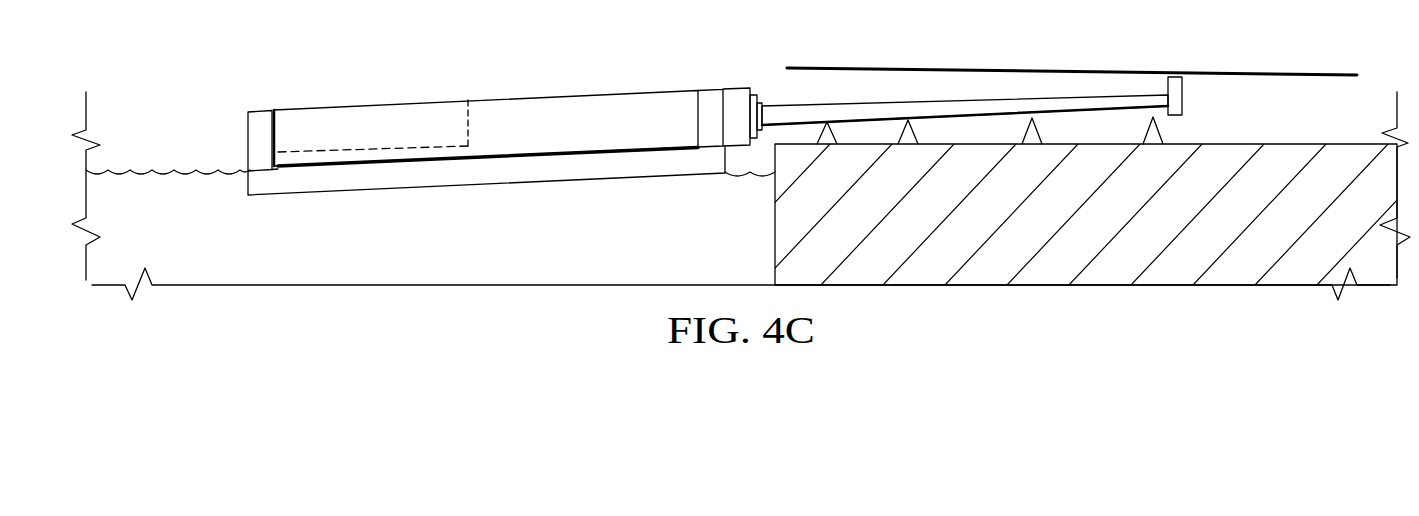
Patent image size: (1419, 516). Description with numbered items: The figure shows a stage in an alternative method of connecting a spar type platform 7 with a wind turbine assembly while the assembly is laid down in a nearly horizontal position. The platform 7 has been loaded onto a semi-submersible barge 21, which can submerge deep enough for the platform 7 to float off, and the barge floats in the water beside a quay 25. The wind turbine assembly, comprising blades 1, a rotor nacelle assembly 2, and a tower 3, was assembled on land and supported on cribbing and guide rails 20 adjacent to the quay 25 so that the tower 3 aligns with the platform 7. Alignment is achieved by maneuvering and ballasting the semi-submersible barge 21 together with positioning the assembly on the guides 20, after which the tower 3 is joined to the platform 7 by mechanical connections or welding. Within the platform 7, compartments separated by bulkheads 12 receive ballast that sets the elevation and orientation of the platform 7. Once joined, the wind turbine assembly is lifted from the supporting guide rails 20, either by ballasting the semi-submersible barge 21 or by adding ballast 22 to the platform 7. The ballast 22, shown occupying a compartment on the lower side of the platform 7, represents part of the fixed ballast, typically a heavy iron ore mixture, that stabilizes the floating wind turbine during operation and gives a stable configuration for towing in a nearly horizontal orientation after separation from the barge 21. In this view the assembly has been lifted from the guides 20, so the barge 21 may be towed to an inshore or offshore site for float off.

The blades 1 is at (1332, 68).
The rotor nacelle assembly 2 is at (1183, 96).
The tower 3 is at (777, 115).
The spar type platform 7 is at (579, 94).
The bulkheads 12 is at (468, 100).
The cribbing and guide rails 20 is at (1152, 147).
The semi-submersible barge 21 is at (260, 111).
The ballast 22 is at (380, 148).
The quay 25 is at (1069, 229).